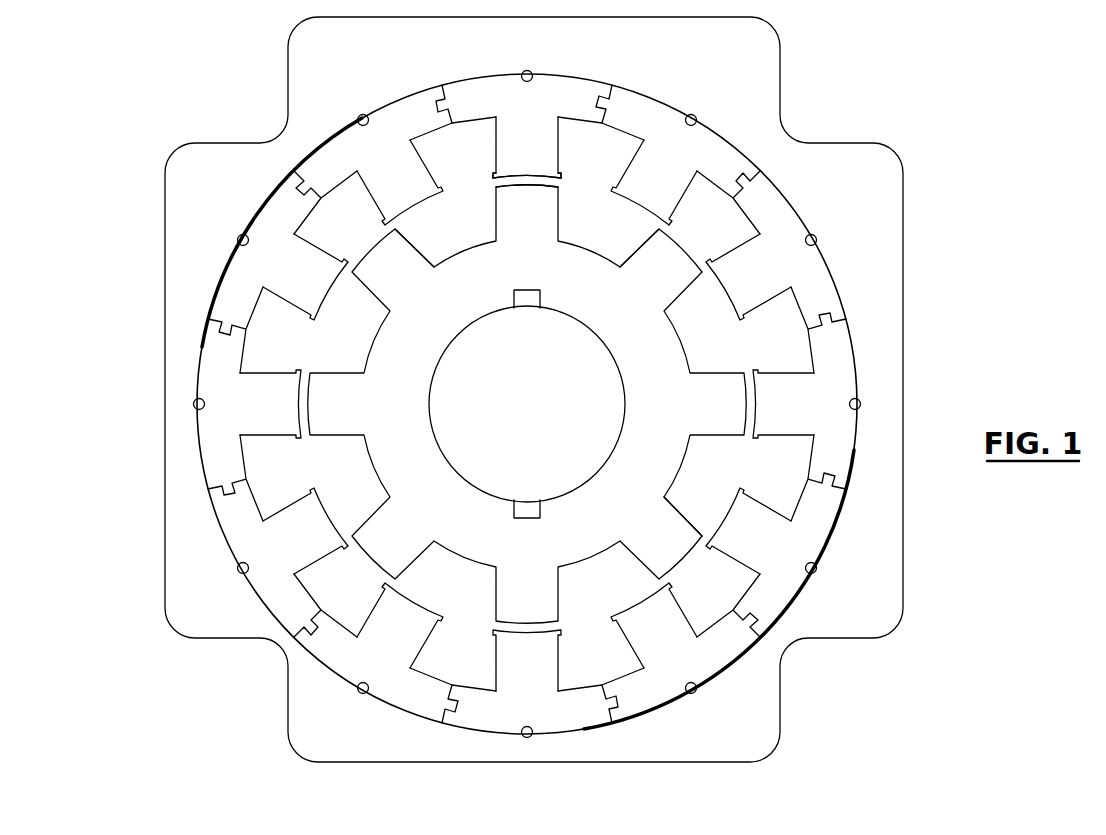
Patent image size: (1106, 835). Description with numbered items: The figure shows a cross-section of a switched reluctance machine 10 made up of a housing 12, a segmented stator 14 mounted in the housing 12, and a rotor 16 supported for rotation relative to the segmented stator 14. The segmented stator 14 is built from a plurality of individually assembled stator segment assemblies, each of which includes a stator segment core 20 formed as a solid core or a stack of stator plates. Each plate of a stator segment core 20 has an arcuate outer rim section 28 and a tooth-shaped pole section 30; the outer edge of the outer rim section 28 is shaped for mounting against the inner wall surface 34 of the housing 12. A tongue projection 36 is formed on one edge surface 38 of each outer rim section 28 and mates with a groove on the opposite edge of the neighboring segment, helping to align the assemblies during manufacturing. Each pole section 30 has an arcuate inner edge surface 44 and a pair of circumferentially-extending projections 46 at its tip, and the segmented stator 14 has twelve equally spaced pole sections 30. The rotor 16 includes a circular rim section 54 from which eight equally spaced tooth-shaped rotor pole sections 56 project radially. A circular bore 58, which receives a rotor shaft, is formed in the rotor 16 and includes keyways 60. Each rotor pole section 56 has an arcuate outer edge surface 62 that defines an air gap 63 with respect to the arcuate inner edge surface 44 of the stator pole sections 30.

The switched reluctance machine 10 is at (830, 85).
The housing 12 is at (877, 185).
The segmented stator 14 is at (832, 262).
The rotor 16 is at (590, 332).
The stator segment core 20 is at (398, 113).
The outer rim section 28 is at (464, 111).
The pole section 30 is at (509, 156).
The inner wall surface 34 is at (820, 237).
The tongue projection 36 is at (452, 80).
The edge surface 38 is at (598, 90).
The arcuate inner edge surface 44 is at (517, 178).
The circumferentially-extending projections 46 is at (492, 175).
The circular rim section 54 is at (633, 421).
The rotor pole sections 56 is at (381, 284).
The circular bore 58 is at (598, 465).
The keyways 60 is at (536, 296).
The arcuate outer edge surface 62 is at (378, 241).
The air gap 63 is at (568, 191).